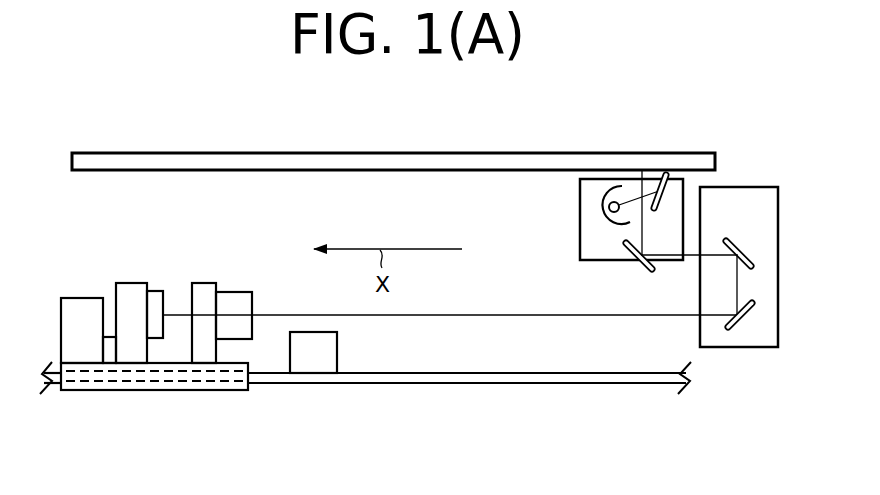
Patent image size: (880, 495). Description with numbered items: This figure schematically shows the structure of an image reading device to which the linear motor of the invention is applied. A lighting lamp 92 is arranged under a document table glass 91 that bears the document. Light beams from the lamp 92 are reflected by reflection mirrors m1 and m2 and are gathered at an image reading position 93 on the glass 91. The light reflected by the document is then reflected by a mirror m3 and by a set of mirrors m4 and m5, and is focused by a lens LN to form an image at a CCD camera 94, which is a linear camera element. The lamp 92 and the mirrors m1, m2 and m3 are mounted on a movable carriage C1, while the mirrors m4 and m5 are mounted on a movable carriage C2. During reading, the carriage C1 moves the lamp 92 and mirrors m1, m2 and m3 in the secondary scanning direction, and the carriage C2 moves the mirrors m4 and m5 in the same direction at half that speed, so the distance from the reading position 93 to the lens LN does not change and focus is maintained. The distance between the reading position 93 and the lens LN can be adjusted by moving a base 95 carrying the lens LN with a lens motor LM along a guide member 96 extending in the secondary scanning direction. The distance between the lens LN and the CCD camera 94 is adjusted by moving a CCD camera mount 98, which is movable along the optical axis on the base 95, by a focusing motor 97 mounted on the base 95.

The document table glass 91 is at (440, 153).
The lighting lamp 92 is at (610, 199).
The image reading position 93 is at (642, 158).
The CCD camera 94 is at (157, 291).
The base 95 is at (183, 390).
The guide member 96 is at (420, 385).
The focusing motor 97 is at (61, 303).
The CCD camera mount 98 is at (116, 290).
The lens LN is at (230, 292).
The lens motor LM is at (338, 345).
The movable carriage C1 is at (578, 252).
The movable carriage C2 is at (698, 339).
The reflection mirror m1 is at (602, 206).
The reflection mirror m2 is at (667, 174).
The mirror m3 is at (627, 265).
The mirror m4 is at (731, 240).
The mirror m5 is at (734, 331).